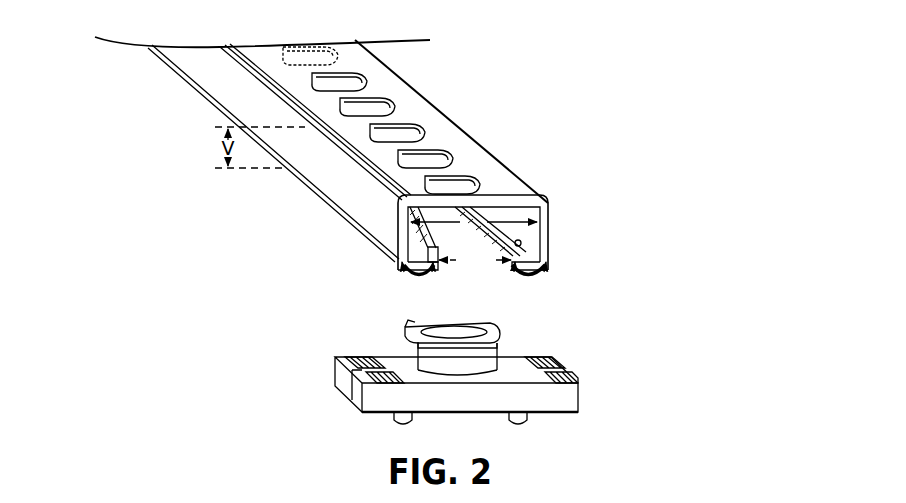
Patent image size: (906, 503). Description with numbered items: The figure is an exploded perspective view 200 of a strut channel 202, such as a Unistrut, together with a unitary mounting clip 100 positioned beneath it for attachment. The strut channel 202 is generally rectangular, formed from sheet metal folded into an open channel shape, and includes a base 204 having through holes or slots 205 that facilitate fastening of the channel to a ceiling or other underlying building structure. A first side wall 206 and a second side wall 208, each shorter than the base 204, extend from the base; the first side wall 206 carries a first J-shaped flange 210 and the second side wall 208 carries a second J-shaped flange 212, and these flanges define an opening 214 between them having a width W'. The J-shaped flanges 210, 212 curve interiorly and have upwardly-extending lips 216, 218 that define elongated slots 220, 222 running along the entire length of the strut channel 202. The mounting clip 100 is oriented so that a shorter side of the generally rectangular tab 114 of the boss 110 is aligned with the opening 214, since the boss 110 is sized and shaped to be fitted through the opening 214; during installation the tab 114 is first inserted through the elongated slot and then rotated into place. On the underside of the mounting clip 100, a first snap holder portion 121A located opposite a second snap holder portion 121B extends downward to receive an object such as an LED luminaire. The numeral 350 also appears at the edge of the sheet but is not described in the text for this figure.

The exploded perspective view 200 is at (587, 44).
The strut channel 202 is at (407, 73).
The base 204 is at (430, 118).
The holes or slots 205 is at (372, 110).
The first side wall 206 is at (205, 77).
The second side wall 208 is at (553, 215).
The first J-shaped flange 210 is at (402, 268).
The second J-shaped flange 212 is at (546, 272).
The opening 214 is at (500, 272).
The upwardly-extending lip 216 is at (403, 242).
The upwardly-extending lip 218 is at (521, 243).
The elongated slot 220 is at (414, 272).
The elongated slot 222 is at (526, 274).
The mounting clip 100 is at (623, 344).
The boss 110 is at (408, 356).
The tab 114 is at (503, 340).
The first snap holder portion 121A is at (403, 420).
The second snap holder portion 121B is at (522, 418).
The assembly 350 is at (727, 502).